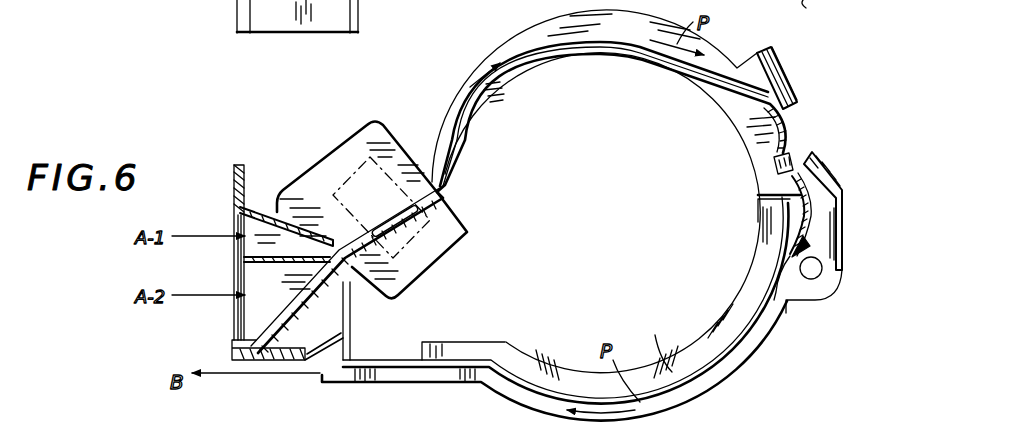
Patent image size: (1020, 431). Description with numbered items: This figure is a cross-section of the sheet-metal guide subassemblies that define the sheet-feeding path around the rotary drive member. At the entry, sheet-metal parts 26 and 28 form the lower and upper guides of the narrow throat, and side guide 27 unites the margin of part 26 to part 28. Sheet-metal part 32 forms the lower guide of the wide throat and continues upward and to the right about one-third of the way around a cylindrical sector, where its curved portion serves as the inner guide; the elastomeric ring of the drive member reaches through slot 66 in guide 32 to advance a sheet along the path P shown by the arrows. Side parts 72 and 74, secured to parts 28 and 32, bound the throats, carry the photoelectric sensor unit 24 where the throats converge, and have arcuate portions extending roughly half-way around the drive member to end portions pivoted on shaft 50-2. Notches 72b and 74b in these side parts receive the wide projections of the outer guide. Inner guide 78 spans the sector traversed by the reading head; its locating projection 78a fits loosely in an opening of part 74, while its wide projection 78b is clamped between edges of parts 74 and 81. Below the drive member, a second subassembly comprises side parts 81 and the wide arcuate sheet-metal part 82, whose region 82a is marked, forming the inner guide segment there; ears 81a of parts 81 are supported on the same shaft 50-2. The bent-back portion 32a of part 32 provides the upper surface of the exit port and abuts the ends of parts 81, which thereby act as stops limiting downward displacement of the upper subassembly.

The photoelectric sensor unit 24 is at (323, 16).
The sheet-metal part 26 is at (268, 263).
The side guide 27 is at (296, 240).
The sheet-metal part 28 is at (260, 207).
The sheet-metal part 32 is at (525, 51).
The bent-back portion 32a is at (306, 355).
The slot 66 is at (590, 37).
The side guide 72 is at (440, 118).
The notch 72b is at (798, 154).
The side guide 74 is at (505, 14).
The notch 74b is at (821, 19).
The inner guide 78 is at (762, 132).
The locating projection 78a is at (775, 172).
The wide projection 78b is at (757, 90).
The side parts 81 is at (395, 385).
The ears 81a is at (812, 240).
The arcuate sheet-metal part 82 is at (452, 341).
The fairing edge 82a is at (651, 348).
The shaft 50-2 is at (822, 270).